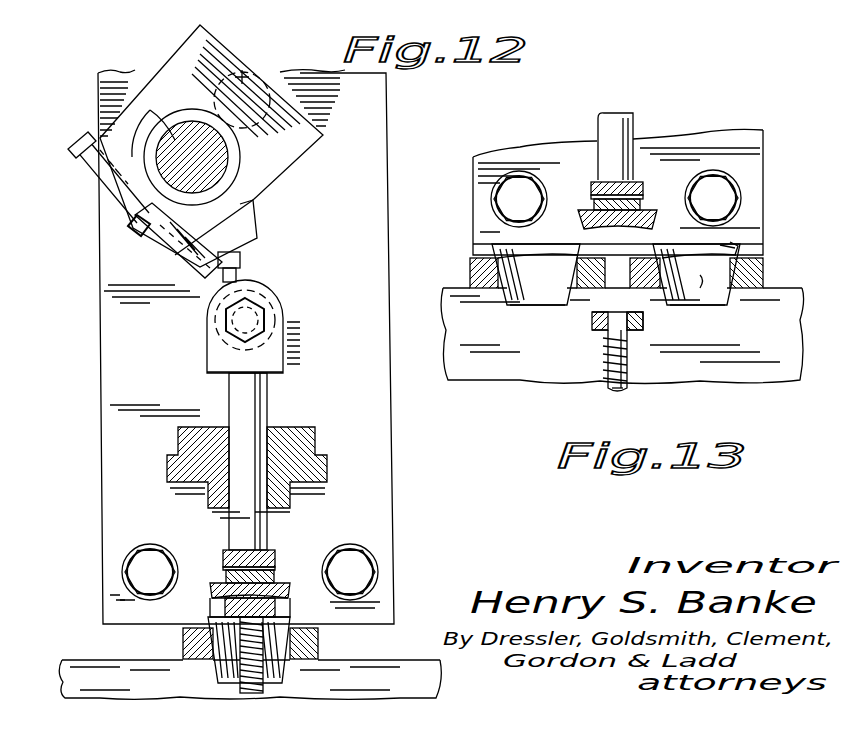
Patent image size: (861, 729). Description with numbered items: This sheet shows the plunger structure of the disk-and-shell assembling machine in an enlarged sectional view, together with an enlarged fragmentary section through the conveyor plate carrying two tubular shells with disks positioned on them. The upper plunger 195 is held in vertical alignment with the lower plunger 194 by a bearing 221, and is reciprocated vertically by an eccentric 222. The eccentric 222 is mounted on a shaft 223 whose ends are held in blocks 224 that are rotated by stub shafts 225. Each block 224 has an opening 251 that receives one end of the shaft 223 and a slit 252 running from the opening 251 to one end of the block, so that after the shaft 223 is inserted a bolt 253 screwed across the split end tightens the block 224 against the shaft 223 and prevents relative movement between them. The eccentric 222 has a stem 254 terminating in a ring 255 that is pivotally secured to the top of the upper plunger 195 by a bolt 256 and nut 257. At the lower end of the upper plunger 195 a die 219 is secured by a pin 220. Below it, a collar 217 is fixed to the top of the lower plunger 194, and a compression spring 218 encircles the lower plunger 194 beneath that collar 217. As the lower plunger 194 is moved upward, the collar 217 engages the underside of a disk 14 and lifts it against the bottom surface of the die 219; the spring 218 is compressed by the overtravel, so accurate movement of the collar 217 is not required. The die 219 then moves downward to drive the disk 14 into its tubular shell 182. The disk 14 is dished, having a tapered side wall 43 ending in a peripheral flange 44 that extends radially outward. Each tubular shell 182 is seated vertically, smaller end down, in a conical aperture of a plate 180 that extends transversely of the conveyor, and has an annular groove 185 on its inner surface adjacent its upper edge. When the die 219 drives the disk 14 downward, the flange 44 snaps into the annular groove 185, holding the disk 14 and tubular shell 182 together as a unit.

In FIG. 12, the disk 14 is at (225, 600).
In FIG. 13, the disk 14 is at (692, 305).
In FIG. 13, the tapered side wall 43 is at (748, 253).
In FIG. 12, the peripheral flange 44 is at (208, 587).
In FIG. 13, the peripheral flange 44 is at (740, 243).
In FIG. 12, the plate 180 is at (183, 645).
In FIG. 13, the plate 180 is at (763, 273).
In FIG. 12, the tubular shell 182 is at (205, 680).
In FIG. 13, the tubular shell 182 is at (490, 300).
In FIG. 12, the annular groove 185 is at (318, 640).
In FIG. 13, the annular groove 185 is at (492, 250).
In FIG. 13, the lower plunger 194 is at (620, 390).
In FIG. 12, the upper plunger 195 is at (248, 400).
In FIG. 13, the upper plunger 195 is at (628, 130).
In FIG. 13, the collar 217 is at (592, 325).
In FIG. 12, the compression spring 218 is at (268, 683).
In FIG. 13, the compression spring 218 is at (600, 352).
In FIG. 12, the die 219 is at (290, 590).
In FIG. 13, the die 219 is at (638, 227).
In FIG. 12, the pin 220 is at (275, 560).
In FIG. 13, the pin 220 is at (643, 188).
In FIG. 12, the bearing 221 is at (315, 450).
In FIG. 12, the eccentric 222 is at (248, 158).
In FIG. 12, the shaft 223 is at (200, 193).
In FIG. 12, the block 224 is at (272, 178).
In FIG. 12, the stub shaft 225 is at (256, 62).
In FIG. 12, the opening 251 is at (157, 75).
In FIG. 12, the slit 252 is at (130, 226).
In FIG. 12, the bolt 253 is at (70, 143).
In FIG. 12, the stem 254 is at (247, 262).
In FIG. 12, the ring 255 is at (207, 309).
In FIG. 12, the bolt 256 is at (255, 313).
In FIG. 12, the nut 257 is at (230, 333).